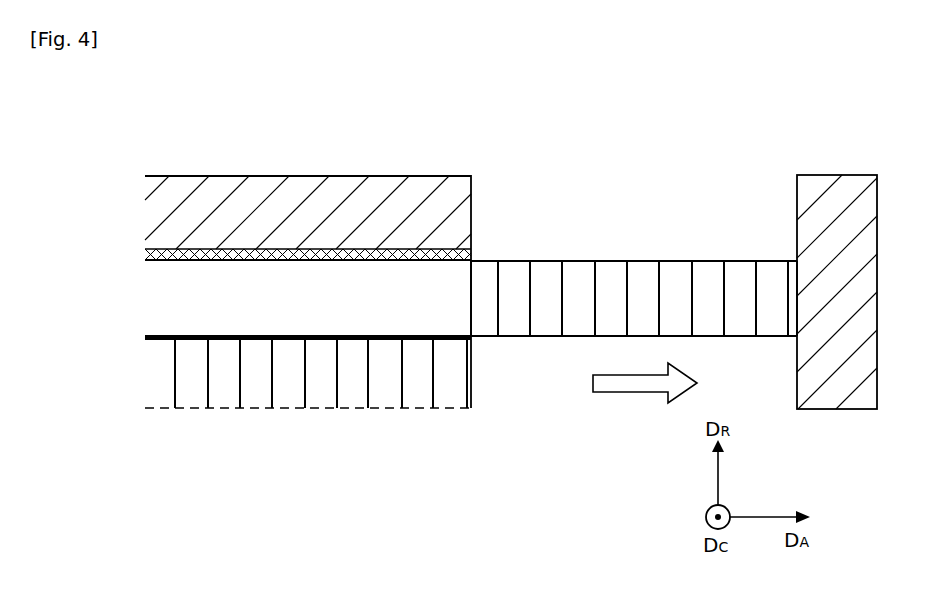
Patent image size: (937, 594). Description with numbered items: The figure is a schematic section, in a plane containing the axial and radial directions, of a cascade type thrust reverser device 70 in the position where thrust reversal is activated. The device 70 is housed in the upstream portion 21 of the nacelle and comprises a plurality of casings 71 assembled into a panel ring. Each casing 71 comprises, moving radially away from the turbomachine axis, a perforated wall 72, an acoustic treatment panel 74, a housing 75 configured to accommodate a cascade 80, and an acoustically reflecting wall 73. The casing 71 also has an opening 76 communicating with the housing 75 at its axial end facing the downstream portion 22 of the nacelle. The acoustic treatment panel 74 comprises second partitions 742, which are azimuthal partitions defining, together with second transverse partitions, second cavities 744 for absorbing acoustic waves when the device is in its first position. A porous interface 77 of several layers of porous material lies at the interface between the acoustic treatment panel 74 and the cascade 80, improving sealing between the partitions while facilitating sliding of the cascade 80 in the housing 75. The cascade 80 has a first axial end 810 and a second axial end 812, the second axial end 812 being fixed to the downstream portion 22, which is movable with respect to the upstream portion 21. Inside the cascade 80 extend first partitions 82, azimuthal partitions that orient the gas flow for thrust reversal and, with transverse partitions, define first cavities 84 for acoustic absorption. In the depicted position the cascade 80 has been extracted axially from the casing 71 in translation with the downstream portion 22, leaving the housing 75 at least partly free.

The thrust reverser device 70 is at (259, 299).
The casing 71 is at (153, 215).
The acoustically reflecting wall 73 is at (157, 260).
The housing 75 is at (257, 295).
The opening 76 is at (463, 293).
The porous interface 77 is at (177, 337).
The acoustic treatment panel 74 is at (259, 425).
The second partitions 742 is at (238, 380).
The second cavities 744 is at (324, 362).
The perforated wall 72 is at (384, 420).
The upstream portion 21 is at (447, 186).
The downstream portion 22 is at (838, 195).
The cascade 80 is at (634, 259).
The first axial end 810 is at (484, 252).
The second axial end 812 is at (787, 256).
The first partitions 82 is at (627, 278).
The first cavities 84 is at (578, 304).